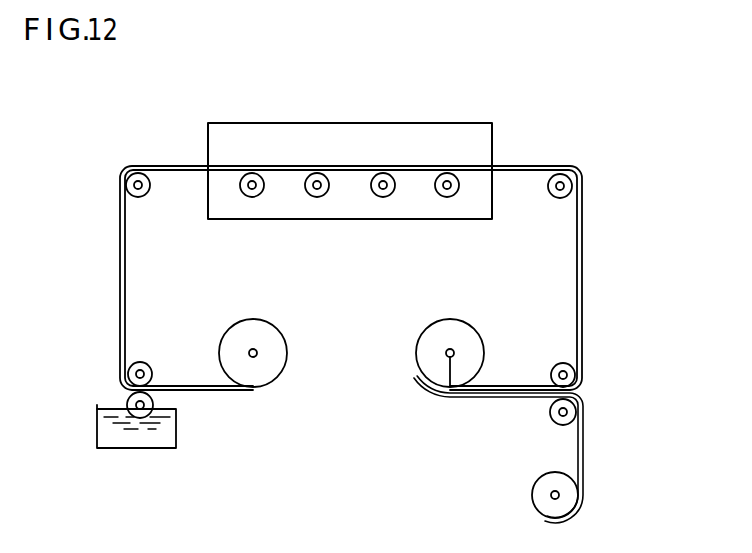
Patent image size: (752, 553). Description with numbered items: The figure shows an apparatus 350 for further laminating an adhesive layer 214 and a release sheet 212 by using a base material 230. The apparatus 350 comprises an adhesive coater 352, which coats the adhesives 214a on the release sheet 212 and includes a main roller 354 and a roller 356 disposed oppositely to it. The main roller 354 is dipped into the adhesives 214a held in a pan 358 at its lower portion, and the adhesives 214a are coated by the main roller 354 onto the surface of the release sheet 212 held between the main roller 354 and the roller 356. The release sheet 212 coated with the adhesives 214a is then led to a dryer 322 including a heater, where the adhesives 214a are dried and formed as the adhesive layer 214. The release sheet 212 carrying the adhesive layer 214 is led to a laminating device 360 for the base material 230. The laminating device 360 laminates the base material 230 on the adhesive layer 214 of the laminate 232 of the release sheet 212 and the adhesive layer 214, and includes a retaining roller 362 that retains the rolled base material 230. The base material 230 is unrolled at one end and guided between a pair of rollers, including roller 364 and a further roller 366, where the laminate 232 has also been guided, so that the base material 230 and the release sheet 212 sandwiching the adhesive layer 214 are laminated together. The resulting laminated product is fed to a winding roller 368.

The dryer 322 is at (274, 120).
The apparatus 350 is at (608, 100).
The release sheet 212 is at (127, 254).
The adhesive layer 214 is at (583, 275).
The adhesives 214a is at (120, 277).
The laminate 232 is at (583, 342).
The adhesive coater 352 is at (146, 423).
The main roller 354 is at (153, 397).
The roller 356 is at (147, 362).
The pan 358 is at (97, 433).
The laminating device 360 is at (585, 399).
The retaining roller 362 is at (555, 498).
The roller 364 is at (555, 422).
The roller 366 is at (557, 364).
The winding roller 368 is at (443, 398).
The base material 230 is at (493, 399).